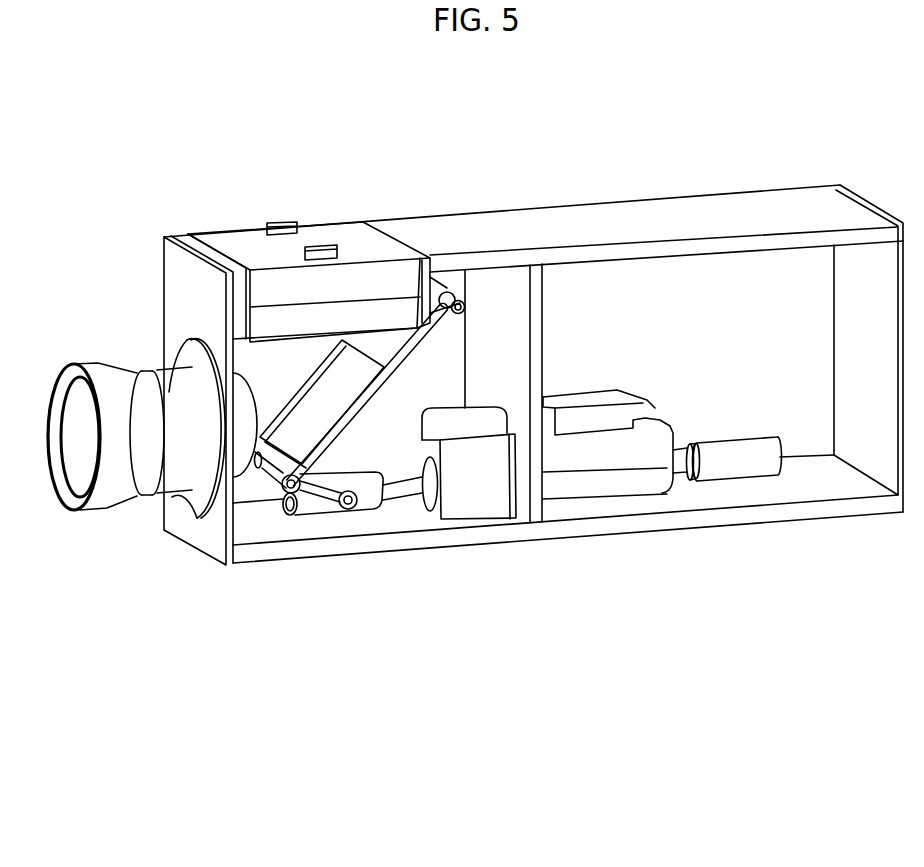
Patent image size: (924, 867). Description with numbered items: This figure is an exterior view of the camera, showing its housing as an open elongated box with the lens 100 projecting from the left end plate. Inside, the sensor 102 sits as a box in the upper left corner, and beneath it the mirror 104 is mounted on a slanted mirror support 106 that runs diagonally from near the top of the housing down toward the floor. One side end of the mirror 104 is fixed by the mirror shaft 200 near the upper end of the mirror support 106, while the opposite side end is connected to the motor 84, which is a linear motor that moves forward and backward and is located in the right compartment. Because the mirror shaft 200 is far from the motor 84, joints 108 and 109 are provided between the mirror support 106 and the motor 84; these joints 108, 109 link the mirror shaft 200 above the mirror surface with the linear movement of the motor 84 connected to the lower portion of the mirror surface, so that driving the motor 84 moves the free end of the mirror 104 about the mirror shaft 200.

The lens 100 is at (72, 490).
The sensor 102 is at (313, 235).
The mirror 104 is at (340, 402).
The mirror support 106 is at (402, 353).
The mirror shaft 200 is at (462, 305).
The joint 108 is at (280, 508).
The joint 109 is at (352, 503).
The motor 84 is at (482, 500).